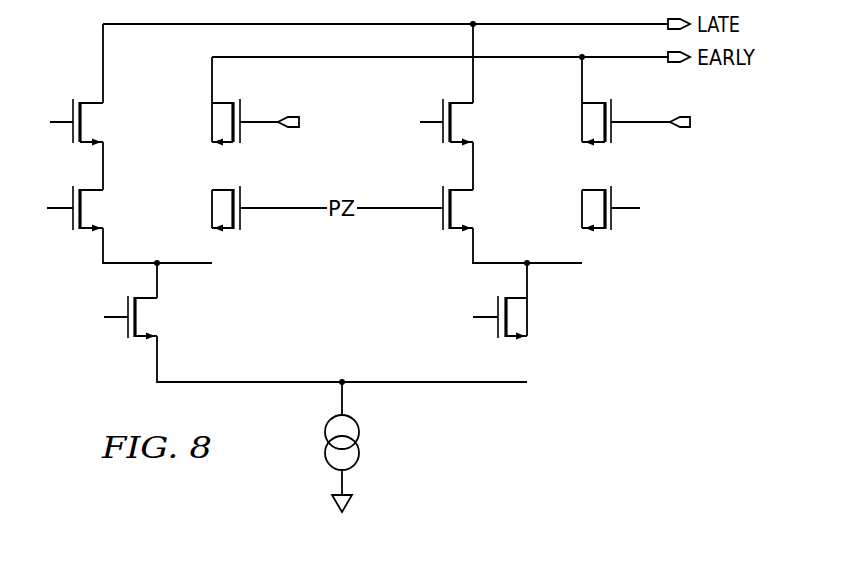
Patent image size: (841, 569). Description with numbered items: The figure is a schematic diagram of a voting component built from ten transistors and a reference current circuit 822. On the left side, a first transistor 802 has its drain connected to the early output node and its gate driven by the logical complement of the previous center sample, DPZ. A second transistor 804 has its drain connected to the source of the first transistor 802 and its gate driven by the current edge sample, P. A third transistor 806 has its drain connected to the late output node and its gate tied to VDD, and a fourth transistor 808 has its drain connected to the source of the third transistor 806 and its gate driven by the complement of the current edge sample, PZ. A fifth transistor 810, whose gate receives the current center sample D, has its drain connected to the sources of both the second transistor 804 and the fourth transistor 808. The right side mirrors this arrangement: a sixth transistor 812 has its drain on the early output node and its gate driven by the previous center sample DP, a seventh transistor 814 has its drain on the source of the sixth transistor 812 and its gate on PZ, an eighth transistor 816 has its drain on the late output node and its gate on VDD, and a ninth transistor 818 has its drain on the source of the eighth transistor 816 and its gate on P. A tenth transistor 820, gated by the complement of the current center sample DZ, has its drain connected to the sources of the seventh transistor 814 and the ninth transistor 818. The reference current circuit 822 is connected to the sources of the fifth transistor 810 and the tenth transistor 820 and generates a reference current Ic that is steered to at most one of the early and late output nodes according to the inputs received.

The first transistor 802 is at (71, 108).
The second transistor 804 is at (72, 219).
The third transistor 806 is at (243, 108).
The fourth transistor 808 is at (243, 219).
The fifth transistor 810 is at (127, 329).
The sixth transistor 812 is at (441, 108).
The seventh transistor 814 is at (441, 219).
The eighth transistor 816 is at (613, 108).
The ninth transistor 818 is at (613, 219).
The tenth transistor 820 is at (497, 329).
The reference current circuit 822 is at (358, 452).